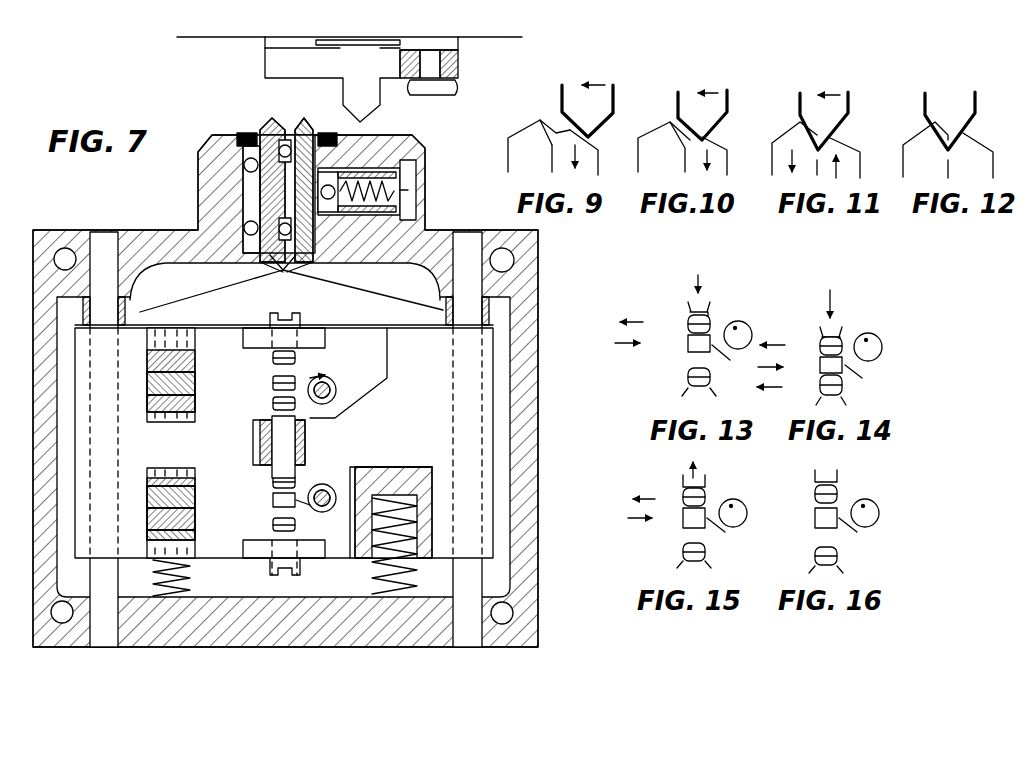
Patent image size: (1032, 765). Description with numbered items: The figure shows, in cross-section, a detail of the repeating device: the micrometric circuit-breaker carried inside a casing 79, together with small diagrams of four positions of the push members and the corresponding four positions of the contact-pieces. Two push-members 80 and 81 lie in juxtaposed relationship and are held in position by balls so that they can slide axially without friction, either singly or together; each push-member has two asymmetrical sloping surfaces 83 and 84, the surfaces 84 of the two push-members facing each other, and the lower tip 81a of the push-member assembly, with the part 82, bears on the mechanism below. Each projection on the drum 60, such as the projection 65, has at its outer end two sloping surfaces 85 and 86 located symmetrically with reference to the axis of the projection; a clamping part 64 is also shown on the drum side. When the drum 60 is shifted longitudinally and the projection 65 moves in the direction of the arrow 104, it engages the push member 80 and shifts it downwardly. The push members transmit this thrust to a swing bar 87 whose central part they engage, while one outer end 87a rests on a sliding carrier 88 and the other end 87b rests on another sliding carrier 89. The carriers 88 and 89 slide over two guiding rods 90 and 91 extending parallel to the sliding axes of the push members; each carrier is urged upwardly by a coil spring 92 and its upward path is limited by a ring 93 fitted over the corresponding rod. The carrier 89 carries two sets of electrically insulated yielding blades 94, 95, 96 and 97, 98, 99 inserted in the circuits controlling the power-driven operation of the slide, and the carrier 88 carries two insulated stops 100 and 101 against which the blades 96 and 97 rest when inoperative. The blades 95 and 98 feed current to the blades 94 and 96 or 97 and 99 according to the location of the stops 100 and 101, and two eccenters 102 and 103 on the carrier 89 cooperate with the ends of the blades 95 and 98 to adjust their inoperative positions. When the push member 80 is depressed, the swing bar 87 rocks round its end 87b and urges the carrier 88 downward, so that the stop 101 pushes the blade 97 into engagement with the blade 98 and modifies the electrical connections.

In FIG. 7, the drum 60 is at (483, 37).
In FIG. 7, the clamping screw 64 is at (457, 88).
In FIG. 7, the projection 65 is at (300, 58).
In FIG. 9, the projection 65 is at (587, 111).
In FIG. 10, the projection 65 is at (702, 115).
In FIG. 11, the projection 65 is at (840, 106).
In FIG. 12, the projection 65 is at (965, 104).
In FIG. 7, the casing 79 is at (527, 476).
In FIG. 7, the push-member 80 is at (318, 168).
In FIG. 9, the push-member 80 is at (590, 160).
In FIG. 10, the push-member 80 is at (718, 165).
In FIG. 11, the push-member 80 is at (852, 166).
In FIG. 12, the push-member 80 is at (985, 165).
In FIG. 7, the push-member 81 is at (258, 134).
In FIG. 9, the push-member 81 is at (515, 156).
In FIG. 10, the push-member 81 is at (650, 165).
In FIG. 11, the push-member 81 is at (778, 162).
In FIG. 12, the push-member 81 is at (918, 150).
In FIG. 7, the plunger tip 81a is at (275, 272).
In FIG. 7, the plunger half 82 is at (306, 126).
In FIG. 7, the sloping surface 83 is at (262, 126).
In FIG. 9, the sloping surface 83 is at (538, 122).
In FIG. 10, the sloping surface 83 is at (722, 140).
In FIG. 7, the sloping surface 84 is at (286, 118).
In FIG. 9, the sloping surface 84 is at (556, 128).
In FIG. 10, the sloping surface 84 is at (688, 132).
In FIG. 7, the sloping surface 85 is at (352, 128).
In FIG. 9, the sloping surface 85 is at (562, 136).
In FIG. 11, the sloping surface 85 is at (800, 125).
In FIG. 7, the sloping surface 86 is at (374, 116).
In FIG. 9, the sloping surface 86 is at (605, 128).
In FIG. 7, the swing bar 87 is at (291, 308).
In FIG. 7, the outer end of swing bar 87a is at (430, 312).
In FIG. 7, the other end of swing bar 87b is at (140, 312).
In FIG. 7, the sliding carrier 88 is at (442, 428).
In FIG. 7, the sliding carrier 89 is at (284, 441).
In FIG. 7, the guiding rod 90 is at (468, 622).
In FIG. 7, the guiding rod 91 is at (104, 622).
In FIG. 7, the coil spring 92 is at (192, 576).
In FIG. 7, the ring 93 is at (93, 300).
In FIG. 7, the yielding blade 94 is at (132, 350).
In FIG. 7, the yielding blade 95 is at (132, 374).
In FIG. 7, the yielding blade 96 is at (132, 395).
In FIG. 7, the yielding blade 97 is at (132, 478).
In FIG. 13, the yielding blade 97 is at (688, 322).
In FIG. 14, the yielding blade 97 is at (820, 345).
In FIG. 15, the yielding blade 97 is at (683, 499).
In FIG. 16, the yielding blade 97 is at (815, 496).
In FIG. 7, the yielding blade 98 is at (132, 494).
In FIG. 13, the yielding blade 98 is at (688, 343).
In FIG. 14, the yielding blade 98 is at (820, 367).
In FIG. 15, the yielding blade 98 is at (683, 518).
In FIG. 16, the yielding blade 98 is at (815, 518).
In FIG. 7, the yielding blade 99 is at (132, 518).
In FIG. 13, the yielding blade 99 is at (688, 378).
In FIG. 14, the yielding blade 99 is at (820, 387).
In FIG. 15, the yielding blade 99 is at (683, 551).
In FIG. 16, the yielding blade 99 is at (815, 553).
In FIG. 7, the stop 100 is at (270, 436).
In FIG. 7, the stop 101 is at (272, 455).
In FIG. 13, the stop 101 is at (705, 306).
In FIG. 14, the stop 101 is at (836, 329).
In FIG. 15, the stop 101 is at (703, 484).
In FIG. 16, the stop 101 is at (836, 472).
In FIG. 7, the eccenter 102 is at (336, 392).
In FIG. 7, the eccenter 103 is at (352, 467).
In FIG. 13, the eccenter 103 is at (742, 340).
In FIG. 14, the eccenter 103 is at (872, 352).
In FIG. 15, the eccenter 103 is at (738, 520).
In FIG. 16, the eccenter 103 is at (870, 522).
In FIG. 7, the arrow 104 is at (262, 30).